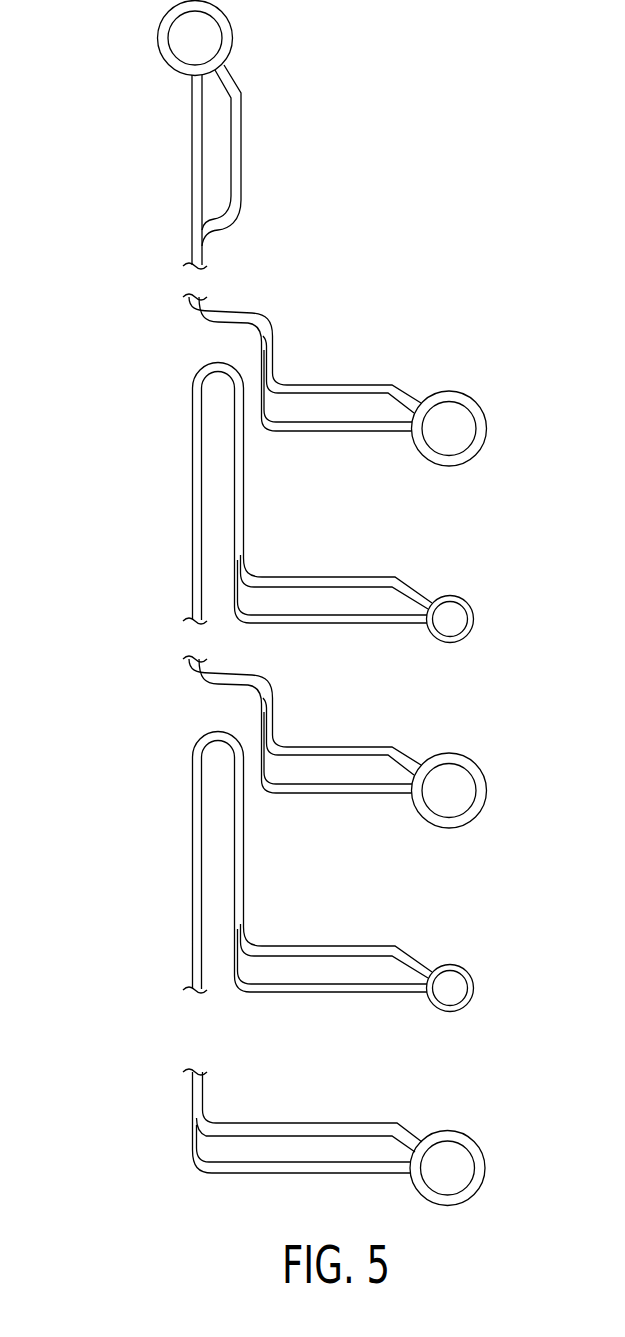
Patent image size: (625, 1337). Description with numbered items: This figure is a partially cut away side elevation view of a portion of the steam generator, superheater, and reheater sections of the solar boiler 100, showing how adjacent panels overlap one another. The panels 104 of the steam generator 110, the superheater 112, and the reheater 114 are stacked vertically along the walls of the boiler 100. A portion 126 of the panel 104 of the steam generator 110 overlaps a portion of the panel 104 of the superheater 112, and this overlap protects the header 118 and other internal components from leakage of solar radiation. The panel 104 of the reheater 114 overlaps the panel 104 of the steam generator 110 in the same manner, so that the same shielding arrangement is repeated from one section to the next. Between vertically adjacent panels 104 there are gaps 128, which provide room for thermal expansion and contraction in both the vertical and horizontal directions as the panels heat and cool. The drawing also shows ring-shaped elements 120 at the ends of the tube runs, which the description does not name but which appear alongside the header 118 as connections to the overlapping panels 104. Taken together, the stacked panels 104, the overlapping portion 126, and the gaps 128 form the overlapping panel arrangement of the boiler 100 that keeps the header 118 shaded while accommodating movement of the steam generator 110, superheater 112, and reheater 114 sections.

The boiler 100 is at (70, 156).
The panels 104 is at (262, 619).
The steam generator 110 is at (192, 590).
The superheater 112 is at (192, 216).
The reheater 114 is at (192, 882).
The header 118 is at (487, 420).
The connector ring 120 is at (229, 55).
The portion of panel 126 is at (192, 401).
The gaps 128 is at (218, 333).